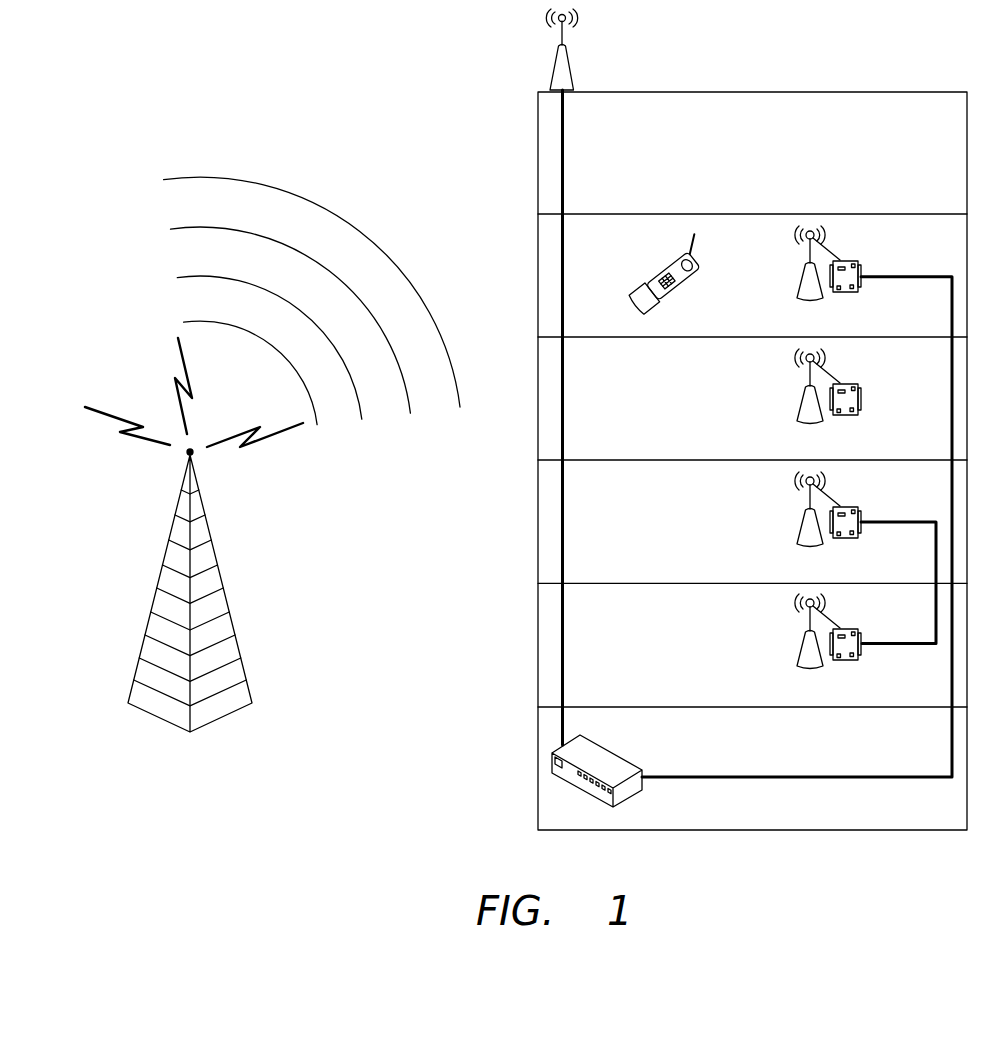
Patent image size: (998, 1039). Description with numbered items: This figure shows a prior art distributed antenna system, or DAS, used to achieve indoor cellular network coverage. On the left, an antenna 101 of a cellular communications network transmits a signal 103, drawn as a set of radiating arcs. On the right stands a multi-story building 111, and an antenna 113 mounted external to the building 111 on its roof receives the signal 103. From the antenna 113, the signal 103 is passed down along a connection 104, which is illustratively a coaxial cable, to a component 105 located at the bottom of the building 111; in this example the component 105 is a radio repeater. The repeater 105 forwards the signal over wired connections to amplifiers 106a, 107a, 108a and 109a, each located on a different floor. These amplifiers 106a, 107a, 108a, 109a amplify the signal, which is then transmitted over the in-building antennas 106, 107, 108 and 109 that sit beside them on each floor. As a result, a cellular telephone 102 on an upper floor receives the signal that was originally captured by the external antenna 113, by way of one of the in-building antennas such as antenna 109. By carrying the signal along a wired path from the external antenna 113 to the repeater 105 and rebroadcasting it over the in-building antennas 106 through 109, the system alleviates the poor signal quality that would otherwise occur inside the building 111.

The antenna 101 is at (182, 486).
The cellular telephone 102 is at (668, 277).
The signal 103 is at (192, 178).
The connection 104 is at (563, 405).
The radio repeater 105 is at (617, 753).
The in-building antenna 106 is at (798, 278).
The amplifier 106a is at (855, 260).
The in-building antenna 107 is at (798, 401).
The amplifier 107a is at (855, 383).
The in-building antenna 108 is at (798, 524).
The amplifier 108a is at (855, 506).
The in-building antenna 109 is at (798, 646).
The amplifier 109a is at (855, 628).
The building 111 is at (538, 520).
The antenna 113 is at (552, 60).